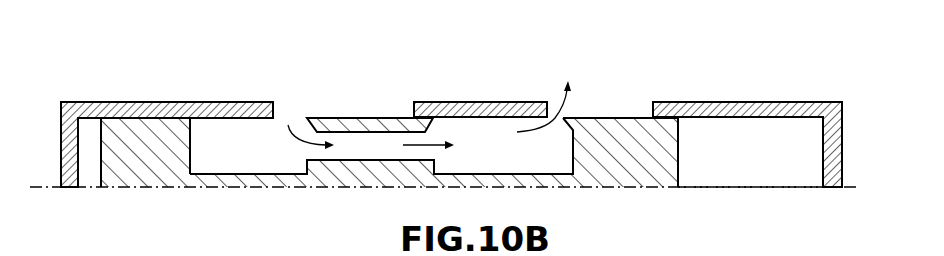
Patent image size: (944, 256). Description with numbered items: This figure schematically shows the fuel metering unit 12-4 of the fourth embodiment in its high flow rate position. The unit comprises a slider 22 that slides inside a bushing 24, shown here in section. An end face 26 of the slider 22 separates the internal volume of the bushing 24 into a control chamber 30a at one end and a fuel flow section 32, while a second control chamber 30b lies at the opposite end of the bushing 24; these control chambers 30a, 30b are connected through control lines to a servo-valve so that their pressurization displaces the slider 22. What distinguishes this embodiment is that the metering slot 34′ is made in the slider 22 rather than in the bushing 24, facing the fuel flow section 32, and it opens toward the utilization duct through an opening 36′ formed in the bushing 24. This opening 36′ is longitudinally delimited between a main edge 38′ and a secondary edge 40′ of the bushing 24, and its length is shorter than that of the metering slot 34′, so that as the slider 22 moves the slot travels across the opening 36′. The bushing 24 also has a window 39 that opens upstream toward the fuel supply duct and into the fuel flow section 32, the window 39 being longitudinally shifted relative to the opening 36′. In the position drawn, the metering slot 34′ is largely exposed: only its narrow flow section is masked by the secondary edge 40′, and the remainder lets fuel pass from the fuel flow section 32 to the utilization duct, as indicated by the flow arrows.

The fuel metering unit 12-4 is at (674, 82).
The slider 22 is at (610, 157).
The bushing 24 is at (713, 102).
The end face 26 is at (154, 157).
The control chamber 30a is at (86, 157).
The control chamber 30b is at (780, 157).
The fuel flow section 32 is at (212, 160).
The metering slot 34′ is at (436, 117).
The opening 36′ is at (547, 100).
The main edge 38′ is at (545, 115).
The window 39 is at (278, 108).
The secondary edge 40′ is at (652, 108).